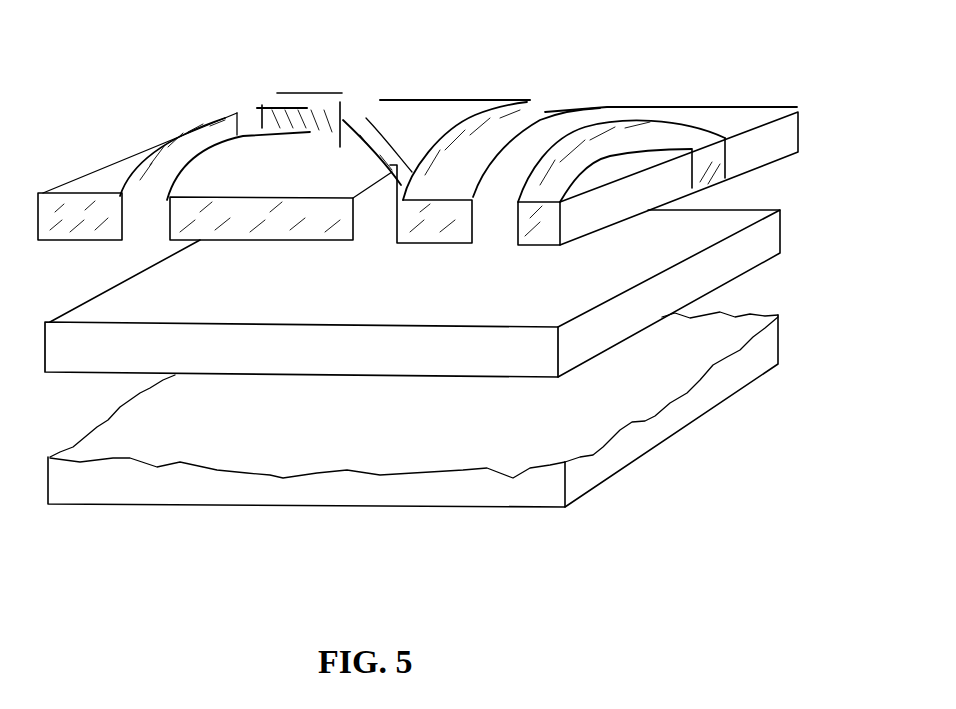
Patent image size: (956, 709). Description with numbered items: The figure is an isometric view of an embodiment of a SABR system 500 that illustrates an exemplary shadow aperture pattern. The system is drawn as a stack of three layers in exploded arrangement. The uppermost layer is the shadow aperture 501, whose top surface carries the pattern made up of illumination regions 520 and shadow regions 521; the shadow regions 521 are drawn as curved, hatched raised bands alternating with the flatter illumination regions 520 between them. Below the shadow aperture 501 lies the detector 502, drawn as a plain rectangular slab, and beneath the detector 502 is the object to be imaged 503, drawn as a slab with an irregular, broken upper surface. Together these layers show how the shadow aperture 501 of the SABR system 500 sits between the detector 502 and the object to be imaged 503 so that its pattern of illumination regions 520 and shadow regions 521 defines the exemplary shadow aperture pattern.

The SABR system 500 is at (695, 637).
The shadow aperture 501 is at (799, 128).
The detector 502 is at (787, 229).
The object to be imaged 503 is at (783, 328).
The illumination regions 520 is at (351, 101).
The shadow regions 521 is at (431, 120).